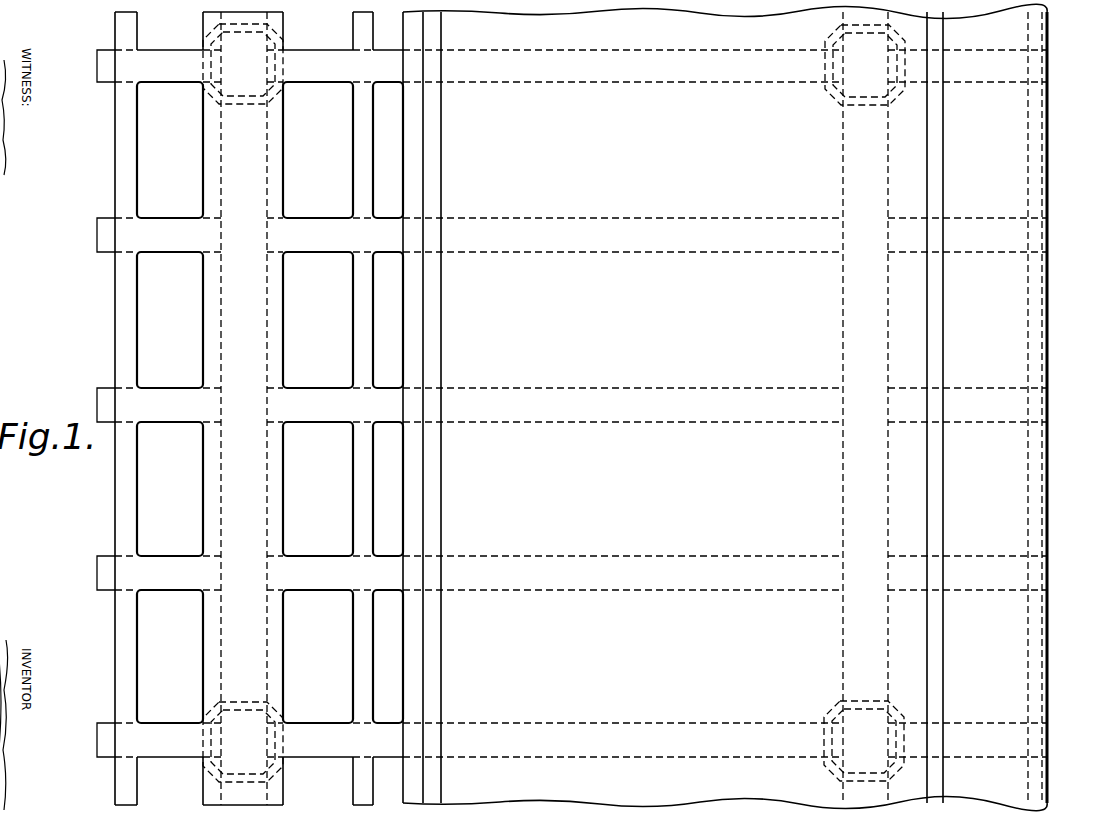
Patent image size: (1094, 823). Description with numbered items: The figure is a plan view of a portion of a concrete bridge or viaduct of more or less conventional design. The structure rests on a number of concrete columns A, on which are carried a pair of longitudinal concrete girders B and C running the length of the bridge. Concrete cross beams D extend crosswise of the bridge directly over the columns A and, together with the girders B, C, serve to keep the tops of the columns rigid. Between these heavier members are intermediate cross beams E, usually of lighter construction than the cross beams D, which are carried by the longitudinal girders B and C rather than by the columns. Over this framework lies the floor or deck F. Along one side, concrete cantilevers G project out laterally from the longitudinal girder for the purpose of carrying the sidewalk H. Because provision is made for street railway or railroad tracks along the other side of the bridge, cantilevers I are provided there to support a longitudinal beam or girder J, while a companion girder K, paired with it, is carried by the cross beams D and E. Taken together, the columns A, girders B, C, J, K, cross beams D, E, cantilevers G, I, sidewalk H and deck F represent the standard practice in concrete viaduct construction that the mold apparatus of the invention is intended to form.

The concrete columns A is at (862, 722).
The longitudinal concrete girder B is at (225, 326).
The longitudinal concrete girder C is at (880, 300).
The concrete cross beams D is at (312, 745).
The intermediate cross beams E is at (320, 391).
The floor or deck F is at (725, 407).
The concrete cantilevers G is at (963, 416).
The sidewalk H is at (1000, 343).
The cantilevers I is at (150, 566).
The longitudinal beam or girder J is at (127, 318).
The companion girder K is at (368, 341).